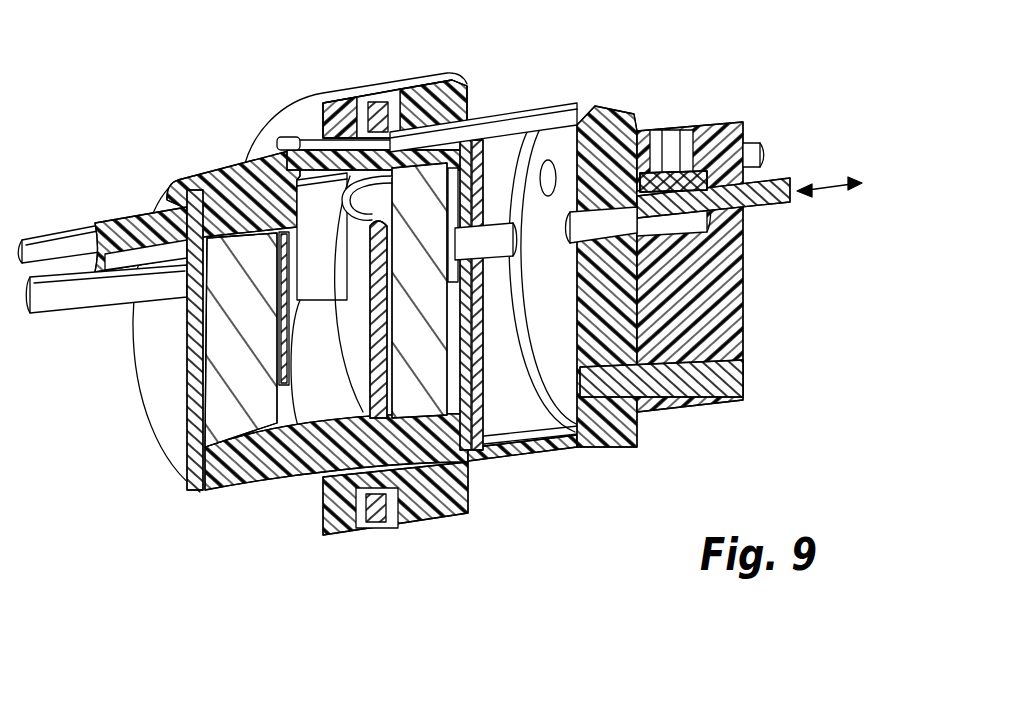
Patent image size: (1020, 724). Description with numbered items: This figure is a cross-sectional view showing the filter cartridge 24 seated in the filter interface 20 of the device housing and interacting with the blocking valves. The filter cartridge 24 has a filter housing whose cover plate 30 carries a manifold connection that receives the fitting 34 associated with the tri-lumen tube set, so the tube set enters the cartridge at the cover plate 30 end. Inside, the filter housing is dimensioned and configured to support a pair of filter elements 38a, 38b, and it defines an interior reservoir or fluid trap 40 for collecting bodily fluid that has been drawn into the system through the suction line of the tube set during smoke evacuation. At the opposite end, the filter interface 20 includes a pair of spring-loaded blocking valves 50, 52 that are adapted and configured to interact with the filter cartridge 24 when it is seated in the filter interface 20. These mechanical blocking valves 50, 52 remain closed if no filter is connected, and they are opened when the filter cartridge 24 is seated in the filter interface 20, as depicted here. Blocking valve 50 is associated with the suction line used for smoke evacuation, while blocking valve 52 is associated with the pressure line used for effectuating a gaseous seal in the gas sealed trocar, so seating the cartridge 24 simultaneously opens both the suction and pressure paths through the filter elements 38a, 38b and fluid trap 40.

The filter interface 20 is at (400, 66).
The filter cartridge 24 is at (218, 504).
The cover plate 30 is at (140, 363).
The fitting 34 is at (121, 220).
The filter element 38a is at (224, 388).
The filter element 38b is at (430, 377).
The fluid trap 40 is at (296, 394).
The blocking valve 50 is at (760, 143).
The blocking valve 52 is at (770, 205).